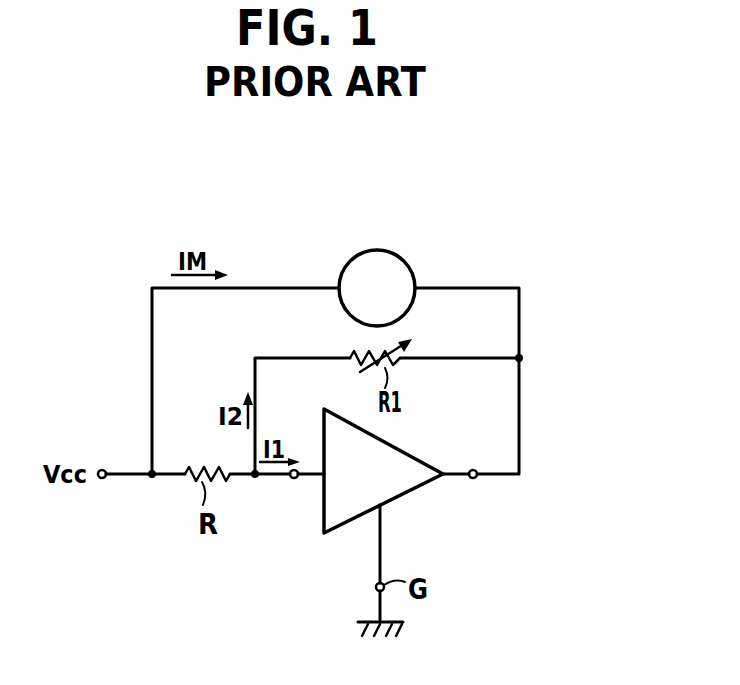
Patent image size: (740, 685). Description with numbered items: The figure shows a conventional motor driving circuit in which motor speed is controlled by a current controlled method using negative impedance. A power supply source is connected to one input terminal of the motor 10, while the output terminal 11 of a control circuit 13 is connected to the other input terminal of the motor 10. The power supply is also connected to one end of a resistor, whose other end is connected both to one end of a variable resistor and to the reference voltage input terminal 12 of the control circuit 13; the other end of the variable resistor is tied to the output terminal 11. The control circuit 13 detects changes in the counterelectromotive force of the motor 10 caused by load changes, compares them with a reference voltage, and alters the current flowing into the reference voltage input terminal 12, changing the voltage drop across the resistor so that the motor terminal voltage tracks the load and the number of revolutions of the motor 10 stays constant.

The motor 10 is at (408, 265).
The output terminal 11 is at (475, 480).
The reference voltage input terminal 12 is at (292, 480).
The control circuit 13 is at (410, 455).